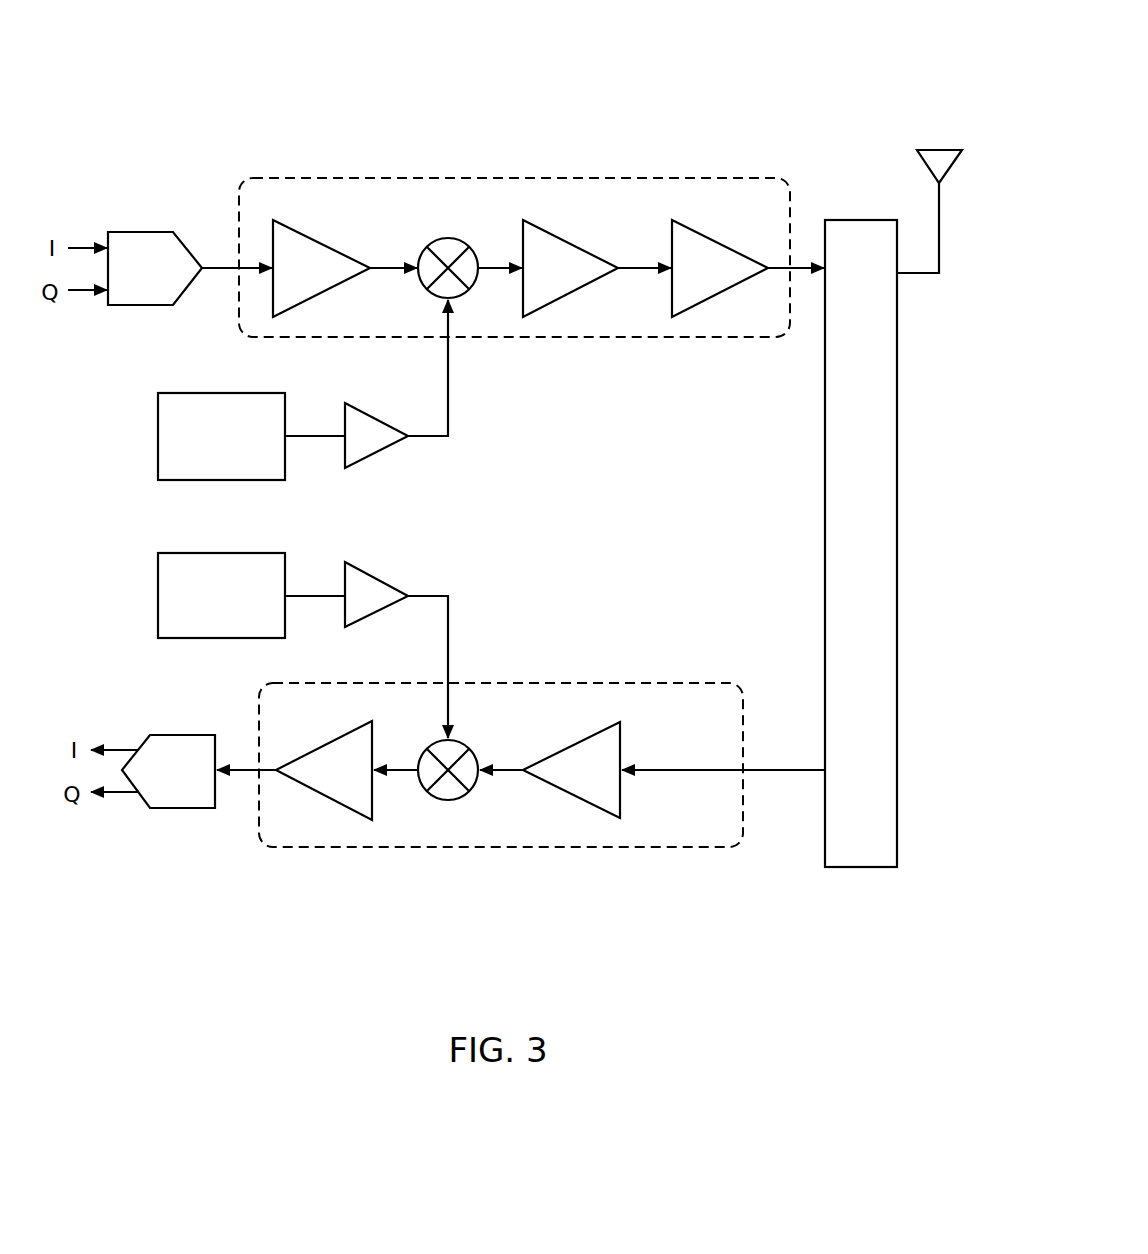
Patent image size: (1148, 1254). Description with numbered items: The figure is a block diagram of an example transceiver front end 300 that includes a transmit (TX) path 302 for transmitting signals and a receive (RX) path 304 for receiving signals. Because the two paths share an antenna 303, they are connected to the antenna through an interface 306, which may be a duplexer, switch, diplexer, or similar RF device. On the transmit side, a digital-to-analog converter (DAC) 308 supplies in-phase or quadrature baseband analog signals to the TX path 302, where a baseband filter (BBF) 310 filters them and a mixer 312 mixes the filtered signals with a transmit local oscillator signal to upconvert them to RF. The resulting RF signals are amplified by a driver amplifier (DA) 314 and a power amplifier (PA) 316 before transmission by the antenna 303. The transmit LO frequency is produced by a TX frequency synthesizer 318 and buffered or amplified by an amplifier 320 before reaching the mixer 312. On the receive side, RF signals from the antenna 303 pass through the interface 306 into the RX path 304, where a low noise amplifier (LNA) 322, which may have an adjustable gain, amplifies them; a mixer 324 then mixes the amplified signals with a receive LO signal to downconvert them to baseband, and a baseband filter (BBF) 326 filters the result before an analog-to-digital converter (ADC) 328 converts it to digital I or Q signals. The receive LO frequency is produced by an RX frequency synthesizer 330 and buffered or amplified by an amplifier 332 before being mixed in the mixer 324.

The transceiver front end 300 is at (874, 37).
The transmit (TX) path 302 is at (705, 178).
The antenna 303 is at (935, 149).
The receive (RX) path 304 is at (672, 682).
The interface 306 is at (851, 220).
The digital-to-analog converter (DAC) 308 is at (138, 232).
The baseband filter (BBF) 310 is at (326, 241).
The mixer 312 is at (452, 238).
The driver amplifier (DA) 314 is at (577, 247).
The power amplifier (PA) 316 is at (707, 237).
The TX frequency synthesizer 318 is at (250, 393).
The amplifier 320 is at (366, 413).
The low noise amplifier (LNA) 322 is at (620, 748).
The mixer 324 is at (470, 748).
The baseband filter (BBF) 326 is at (341, 736).
The analog-to-digital converter (ADC) 328 is at (180, 735).
The RX frequency synthesizer 330 is at (250, 553).
The amplifier 332 is at (366, 573).